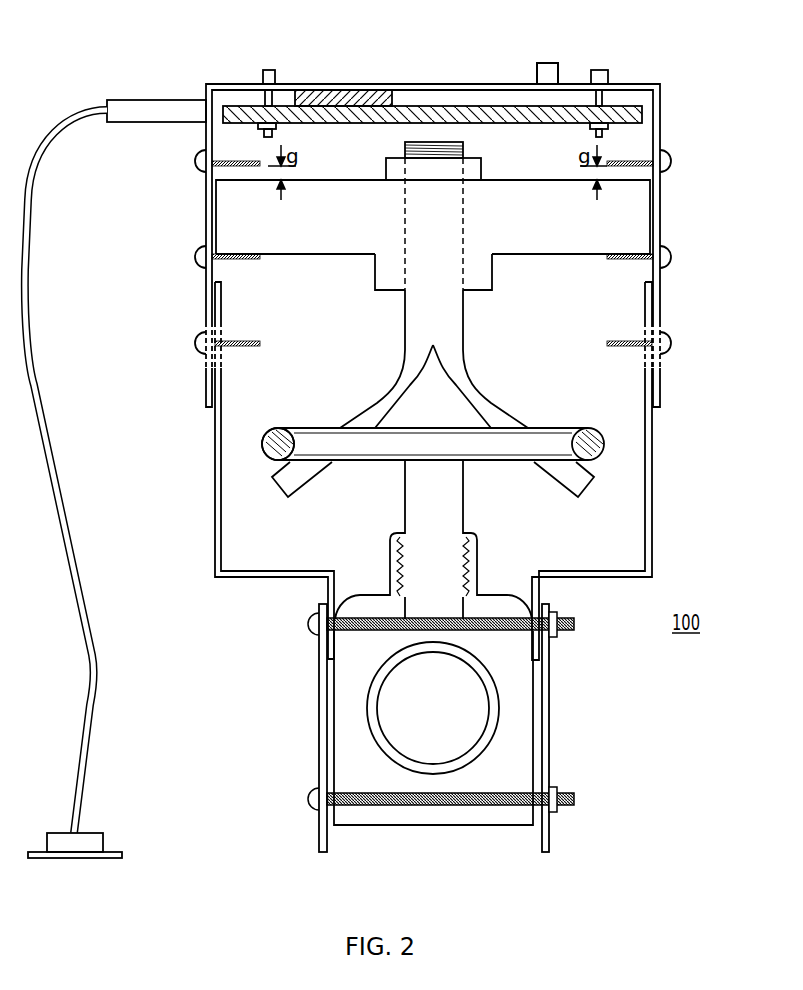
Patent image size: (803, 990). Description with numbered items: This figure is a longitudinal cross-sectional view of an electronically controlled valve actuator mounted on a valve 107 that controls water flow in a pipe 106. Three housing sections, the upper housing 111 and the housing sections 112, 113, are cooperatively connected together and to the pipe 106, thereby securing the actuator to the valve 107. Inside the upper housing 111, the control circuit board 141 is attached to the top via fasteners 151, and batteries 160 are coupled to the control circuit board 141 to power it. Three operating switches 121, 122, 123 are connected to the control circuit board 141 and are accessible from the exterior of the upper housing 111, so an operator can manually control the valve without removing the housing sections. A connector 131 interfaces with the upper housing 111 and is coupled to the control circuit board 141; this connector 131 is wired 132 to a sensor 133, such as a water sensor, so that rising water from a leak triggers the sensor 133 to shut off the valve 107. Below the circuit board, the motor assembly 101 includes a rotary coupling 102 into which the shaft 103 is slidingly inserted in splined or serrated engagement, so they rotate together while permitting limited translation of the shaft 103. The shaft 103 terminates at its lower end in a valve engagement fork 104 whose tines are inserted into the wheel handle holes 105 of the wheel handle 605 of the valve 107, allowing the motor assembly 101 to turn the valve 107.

The motor assembly 101 is at (635, 215).
The rotary coupling 102 is at (492, 272).
The shaft 103 is at (463, 312).
The valve engagement fork 104 is at (592, 485).
The wheel handle holes 105 is at (545, 428).
The wheel handle 605 is at (273, 442).
The pipe 106 is at (498, 721).
The valve 107 is at (545, 690).
The upper housing 111 is at (445, 85).
The housing section 112 is at (216, 522).
The housing section 113 is at (318, 702).
The operating switch 121 is at (545, 73).
The operating switch 122 is at (547, 73).
The operating switch 123 is at (547, 73).
The connector 131 is at (165, 100).
The wire 132 is at (97, 672).
The sensor 133 is at (105, 850).
The control circuit board 141 is at (520, 115).
The fasteners 151 is at (268, 80).
The batteries 160 is at (350, 95).